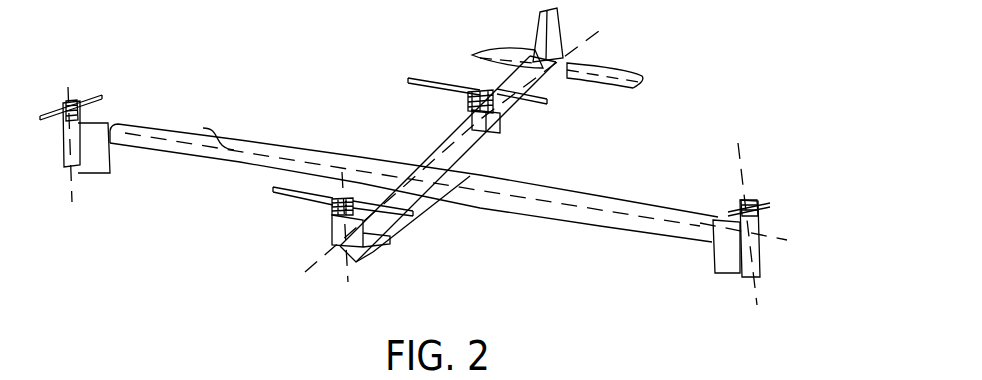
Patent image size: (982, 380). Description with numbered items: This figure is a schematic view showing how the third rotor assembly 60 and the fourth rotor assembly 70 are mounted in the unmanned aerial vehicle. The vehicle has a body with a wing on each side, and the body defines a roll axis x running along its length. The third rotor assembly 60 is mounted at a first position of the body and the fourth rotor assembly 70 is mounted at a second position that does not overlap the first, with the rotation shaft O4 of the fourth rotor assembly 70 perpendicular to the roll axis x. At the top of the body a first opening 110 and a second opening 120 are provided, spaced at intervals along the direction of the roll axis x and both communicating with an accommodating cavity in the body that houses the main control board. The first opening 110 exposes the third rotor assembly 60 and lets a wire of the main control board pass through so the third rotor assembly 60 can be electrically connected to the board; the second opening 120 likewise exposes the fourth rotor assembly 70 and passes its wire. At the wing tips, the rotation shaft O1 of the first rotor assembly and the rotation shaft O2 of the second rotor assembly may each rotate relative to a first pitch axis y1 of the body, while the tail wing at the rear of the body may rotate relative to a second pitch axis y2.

The third rotor assembly 60 is at (332, 207).
The fourth rotor assembly 70 is at (480, 93).
The first opening 110 is at (338, 223).
The second opening 120 is at (487, 118).
The rotation shaft of the first rotor assembly O1 is at (742, 167).
The rotation shaft of the second rotor assembly O2 is at (68, 68).
The rotation shaft of the fourth rotor assembly O4 is at (346, 276).
The roll axis x is at (295, 282).
The first pitch axis y1 is at (777, 238).
The second pitch axis y2 is at (640, 85).